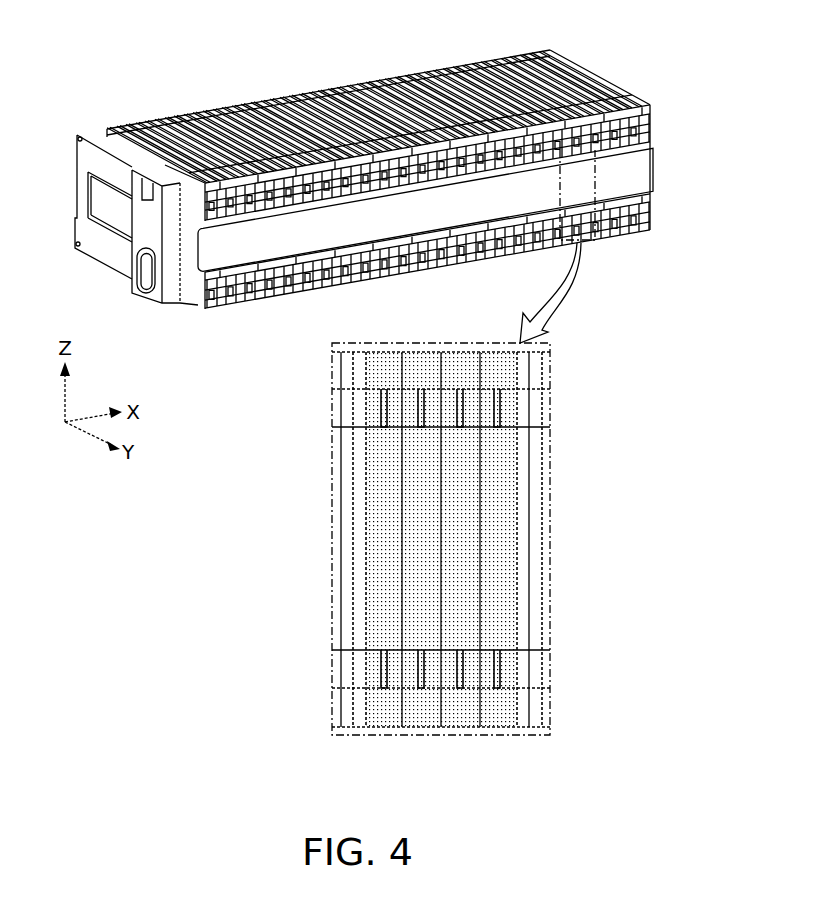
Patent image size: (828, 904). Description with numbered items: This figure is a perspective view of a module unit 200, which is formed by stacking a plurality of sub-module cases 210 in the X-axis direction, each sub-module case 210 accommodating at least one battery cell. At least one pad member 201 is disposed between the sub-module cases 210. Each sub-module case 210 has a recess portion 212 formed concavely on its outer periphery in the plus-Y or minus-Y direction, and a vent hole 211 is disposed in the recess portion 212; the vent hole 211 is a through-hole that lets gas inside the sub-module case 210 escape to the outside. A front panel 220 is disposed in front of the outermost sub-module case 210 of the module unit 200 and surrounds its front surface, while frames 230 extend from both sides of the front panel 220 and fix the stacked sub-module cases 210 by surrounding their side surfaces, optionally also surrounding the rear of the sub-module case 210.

The module unit 200 is at (103, 21).
The pad member 201 is at (535, 447).
The sub-module case 210 is at (590, 80).
The vent hole 211 is at (496, 400).
The recess portion 212 is at (644, 120).
The front panel 220 is at (112, 253).
The frame 230 is at (220, 257).